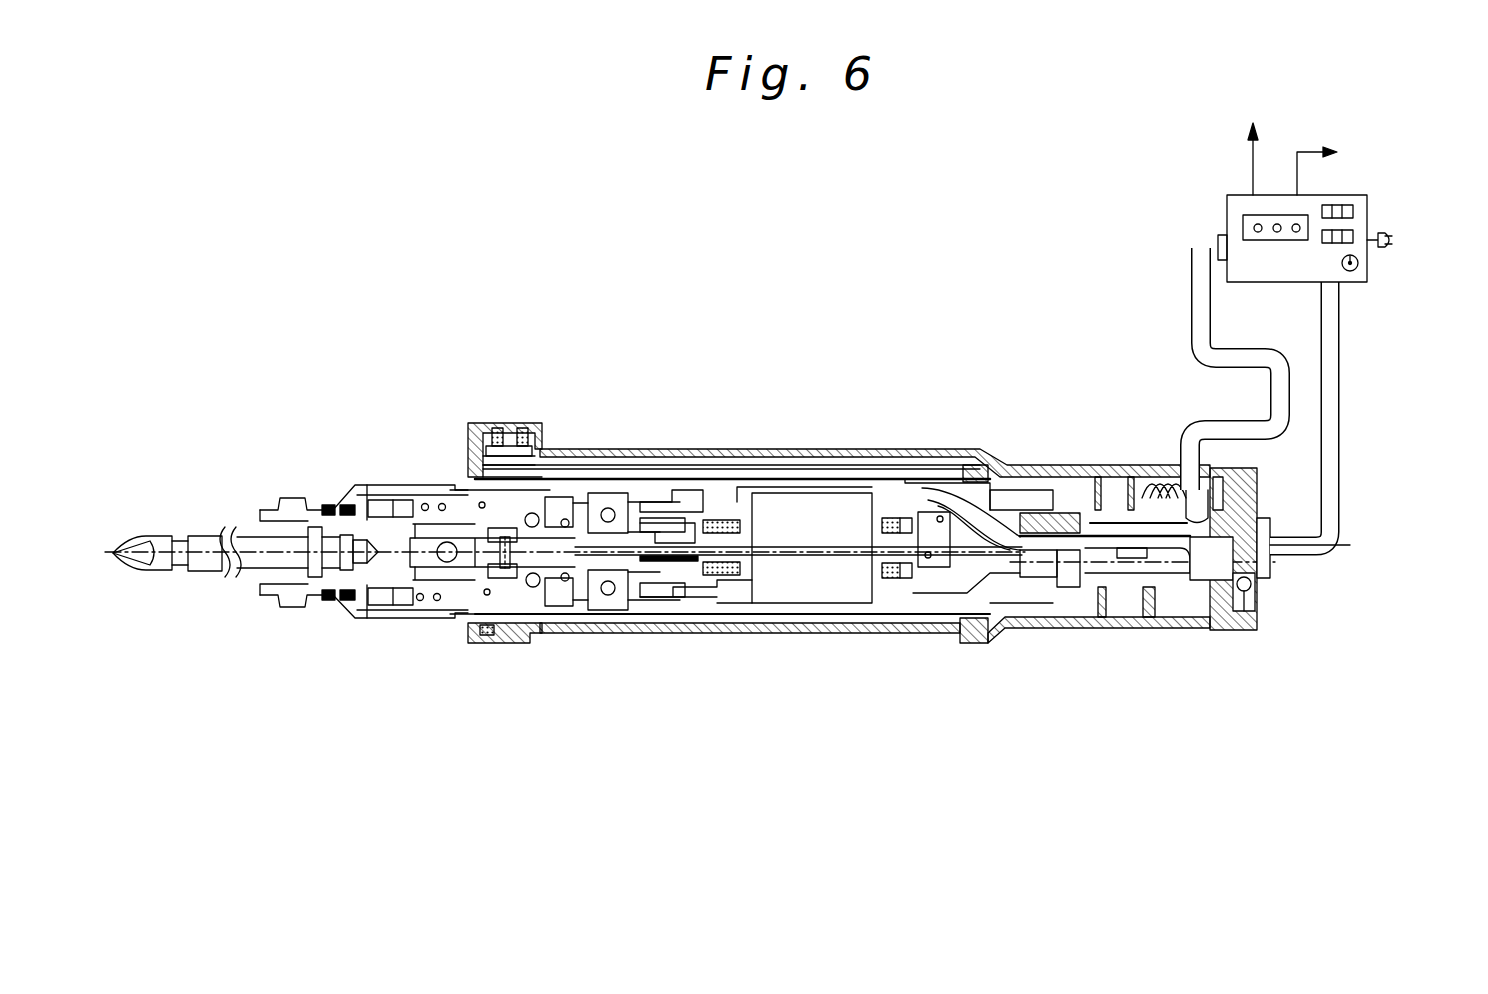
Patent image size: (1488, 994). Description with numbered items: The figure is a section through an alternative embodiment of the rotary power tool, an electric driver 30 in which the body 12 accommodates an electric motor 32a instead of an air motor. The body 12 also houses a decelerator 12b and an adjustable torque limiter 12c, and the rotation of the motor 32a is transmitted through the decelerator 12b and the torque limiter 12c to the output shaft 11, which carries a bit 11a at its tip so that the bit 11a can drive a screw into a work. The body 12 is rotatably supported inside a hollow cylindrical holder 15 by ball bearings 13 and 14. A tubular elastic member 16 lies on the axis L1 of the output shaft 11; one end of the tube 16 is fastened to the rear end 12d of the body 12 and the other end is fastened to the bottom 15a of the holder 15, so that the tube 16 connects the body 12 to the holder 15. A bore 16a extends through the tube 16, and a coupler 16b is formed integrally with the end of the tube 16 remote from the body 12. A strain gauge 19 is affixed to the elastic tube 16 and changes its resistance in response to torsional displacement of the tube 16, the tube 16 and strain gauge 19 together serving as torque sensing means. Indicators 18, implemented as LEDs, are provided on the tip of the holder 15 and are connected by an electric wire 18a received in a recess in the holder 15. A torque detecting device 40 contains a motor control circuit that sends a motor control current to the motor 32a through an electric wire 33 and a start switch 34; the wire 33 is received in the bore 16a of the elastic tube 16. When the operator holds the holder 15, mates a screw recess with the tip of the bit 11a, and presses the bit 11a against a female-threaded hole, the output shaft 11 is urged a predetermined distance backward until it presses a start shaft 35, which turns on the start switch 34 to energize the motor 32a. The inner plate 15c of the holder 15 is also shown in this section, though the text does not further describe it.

The bit 11a is at (248, 534).
The output shaft 11 is at (380, 537).
The ball bearing 13 is at (470, 472).
The torque limiter 12c is at (530, 580).
The start shaft 35 is at (678, 505).
The decelerator 12b is at (655, 567).
The body 12 is at (802, 603).
The electric driver 30 is at (840, 378).
The electric motor 32a is at (853, 590).
The start switch 34 is at (932, 527).
The ball bearing 14 is at (958, 448).
The rear end of the body 12d is at (1033, 507).
The tubular elastic member 16 is at (1082, 527).
The bore 16a is at (1125, 532).
The strain gauge 19 is at (1125, 555).
The holder 15 is at (757, 450).
The inner plate 15c is at (807, 463).
The indicator 18 is at (522, 425).
The electric wire 18a is at (623, 463).
The bottom of the holder 15a is at (1240, 600).
The coupler 16b is at (1190, 440).
The electric wire 33 is at (1327, 380).
The axis L1 is at (1327, 545).
The torque detecting device 40 is at (1227, 212).